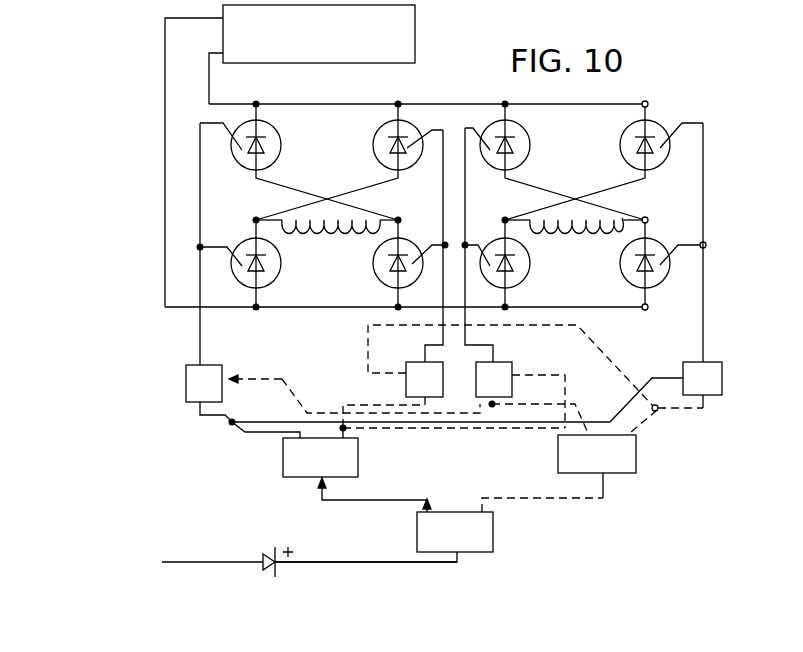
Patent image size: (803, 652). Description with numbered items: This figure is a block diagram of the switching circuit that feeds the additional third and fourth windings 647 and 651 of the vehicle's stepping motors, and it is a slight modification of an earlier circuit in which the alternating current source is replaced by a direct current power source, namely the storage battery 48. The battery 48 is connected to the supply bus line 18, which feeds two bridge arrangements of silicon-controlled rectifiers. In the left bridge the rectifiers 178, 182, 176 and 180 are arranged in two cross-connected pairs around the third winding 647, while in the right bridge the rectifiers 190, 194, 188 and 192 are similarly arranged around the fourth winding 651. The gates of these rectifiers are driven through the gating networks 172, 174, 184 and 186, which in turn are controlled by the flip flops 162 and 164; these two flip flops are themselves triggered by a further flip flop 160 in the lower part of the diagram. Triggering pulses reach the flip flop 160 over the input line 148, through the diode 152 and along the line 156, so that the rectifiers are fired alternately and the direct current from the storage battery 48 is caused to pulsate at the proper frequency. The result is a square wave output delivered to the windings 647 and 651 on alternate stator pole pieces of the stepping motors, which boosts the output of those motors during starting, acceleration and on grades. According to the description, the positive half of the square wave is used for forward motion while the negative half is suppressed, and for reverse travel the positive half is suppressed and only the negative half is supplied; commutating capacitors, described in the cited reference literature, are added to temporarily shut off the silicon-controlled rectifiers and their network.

The storage battery 48 is at (415, 40).
The power supply bus line 18 is at (458, 104).
The silicon controlled rectifier 178 is at (275, 128).
The silicon controlled rectifier 182 is at (372, 155).
The silicon controlled rectifier 176 is at (247, 244).
The silicon controlled rectifier 180 is at (387, 284).
The silicon controlled rectifier 190 is at (532, 134).
The silicon controlled rectifier 194 is at (656, 120).
The silicon controlled rectifier 188 is at (526, 277).
The silicon controlled rectifier 192 is at (662, 290).
The third winding 647 is at (317, 232).
The fourth winding 651 is at (582, 230).
The N gate circuit 172 is at (210, 363).
The N gate circuit 174 is at (405, 385).
The N gate circuit 184 is at (512, 382).
The N gate circuit 186 is at (723, 380).
The flip flop 162 is at (277, 475).
The flip flop 164 is at (636, 457).
The flip flop 160 is at (494, 521).
The input line 148 is at (209, 562).
The diode 152 is at (262, 558).
The input line 156 is at (361, 562).